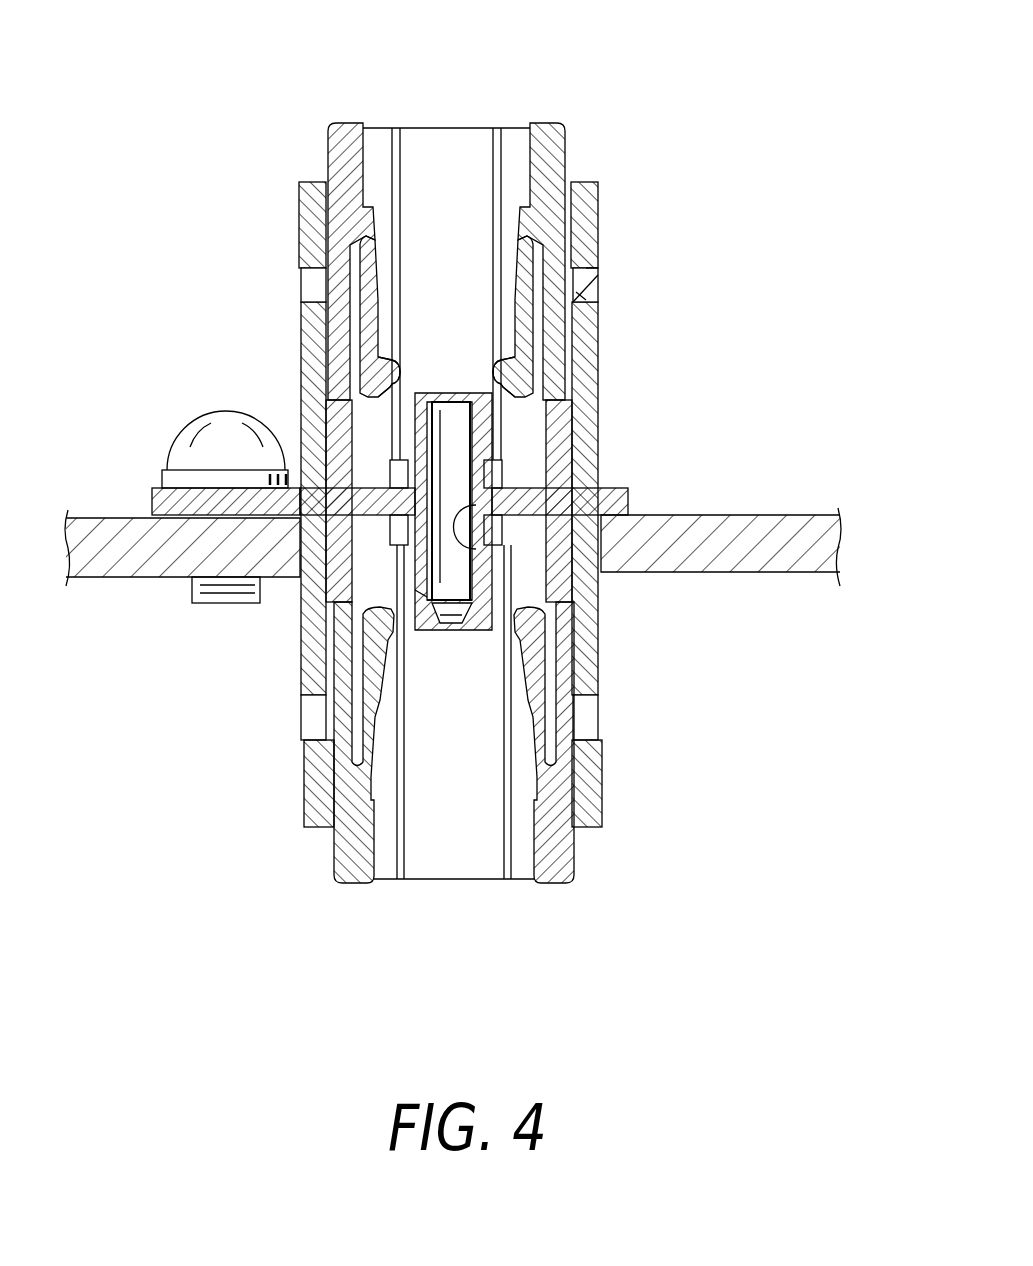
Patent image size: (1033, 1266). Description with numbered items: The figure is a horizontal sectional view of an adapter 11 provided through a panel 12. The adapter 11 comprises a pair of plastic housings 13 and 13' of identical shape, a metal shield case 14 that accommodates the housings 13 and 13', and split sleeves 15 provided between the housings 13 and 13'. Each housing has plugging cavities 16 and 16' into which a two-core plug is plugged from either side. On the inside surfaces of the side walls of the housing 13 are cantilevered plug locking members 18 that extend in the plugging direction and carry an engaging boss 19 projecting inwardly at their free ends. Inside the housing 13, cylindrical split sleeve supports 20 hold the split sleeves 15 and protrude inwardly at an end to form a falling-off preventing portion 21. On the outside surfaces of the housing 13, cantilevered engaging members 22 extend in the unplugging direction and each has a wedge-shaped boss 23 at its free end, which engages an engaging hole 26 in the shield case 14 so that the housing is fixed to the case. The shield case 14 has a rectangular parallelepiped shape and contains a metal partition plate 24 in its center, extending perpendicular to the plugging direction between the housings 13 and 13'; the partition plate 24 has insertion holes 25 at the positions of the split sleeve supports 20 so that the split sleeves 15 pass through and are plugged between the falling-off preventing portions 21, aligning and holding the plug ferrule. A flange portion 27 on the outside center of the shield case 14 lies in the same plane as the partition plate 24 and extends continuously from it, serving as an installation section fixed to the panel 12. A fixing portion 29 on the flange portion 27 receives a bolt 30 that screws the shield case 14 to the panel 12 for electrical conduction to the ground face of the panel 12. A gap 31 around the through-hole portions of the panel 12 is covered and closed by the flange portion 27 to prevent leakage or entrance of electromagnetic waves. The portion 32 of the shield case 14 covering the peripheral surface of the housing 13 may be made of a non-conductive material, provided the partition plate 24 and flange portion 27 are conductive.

The adapter 11 is at (600, 125).
The panel 12 is at (97, 556).
The housing 13 is at (376, 244).
The housing 13' is at (532, 761).
The shield case 14 is at (605, 200).
The split sleeve 15 is at (433, 578).
The plugging cavity 16 is at (446, 259).
The plugging cavity 16' is at (450, 740).
The plug locking member 18 is at (365, 334).
The engaging boss 19 is at (370, 358).
The split sleeve support 20 is at (415, 430).
The falling-off preventing portion 21 is at (438, 393).
The engaging member 22 is at (572, 413).
The wedge-shaped boss 23 is at (593, 275).
The partition plate 24 is at (533, 488).
The insertion hole 25 is at (480, 578).
The engaging hole 26 is at (580, 298).
The flange portion 27 is at (615, 493).
The fixing portion 29 is at (173, 505).
The bolt 30 is at (207, 452).
The gap 31 is at (605, 560).
The portion for covering the peripheral surface of the housing 32 is at (298, 232).